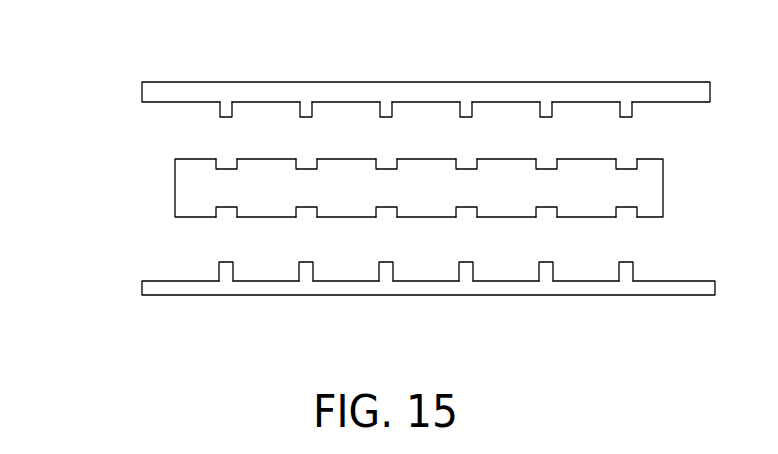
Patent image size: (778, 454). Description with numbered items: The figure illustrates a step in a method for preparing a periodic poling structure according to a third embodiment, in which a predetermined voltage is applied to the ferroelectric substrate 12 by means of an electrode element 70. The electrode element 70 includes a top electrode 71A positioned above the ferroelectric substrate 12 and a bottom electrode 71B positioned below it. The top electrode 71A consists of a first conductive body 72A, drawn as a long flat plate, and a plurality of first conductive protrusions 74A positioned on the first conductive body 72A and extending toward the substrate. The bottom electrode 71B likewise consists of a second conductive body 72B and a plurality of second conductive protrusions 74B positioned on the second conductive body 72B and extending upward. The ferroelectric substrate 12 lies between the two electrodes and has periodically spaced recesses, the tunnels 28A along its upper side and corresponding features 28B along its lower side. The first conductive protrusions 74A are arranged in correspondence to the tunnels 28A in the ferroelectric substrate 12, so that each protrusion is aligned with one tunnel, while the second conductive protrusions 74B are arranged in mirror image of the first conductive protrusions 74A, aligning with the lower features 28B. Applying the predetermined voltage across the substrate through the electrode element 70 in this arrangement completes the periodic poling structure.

The electrode element 70 is at (70, 150).
The top electrode 71A is at (142, 83).
The bottom electrode 71B is at (143, 290).
The first conductive body 72A is at (606, 86).
The second conductive body 72B is at (606, 292).
The first conductive protrusions 74A is at (627, 113).
The second conductive protrusions 74B is at (628, 270).
The ferroelectric substrate 12 is at (648, 184).
The tunnels 28A is at (625, 166).
The lower recesses 28B is at (625, 210).